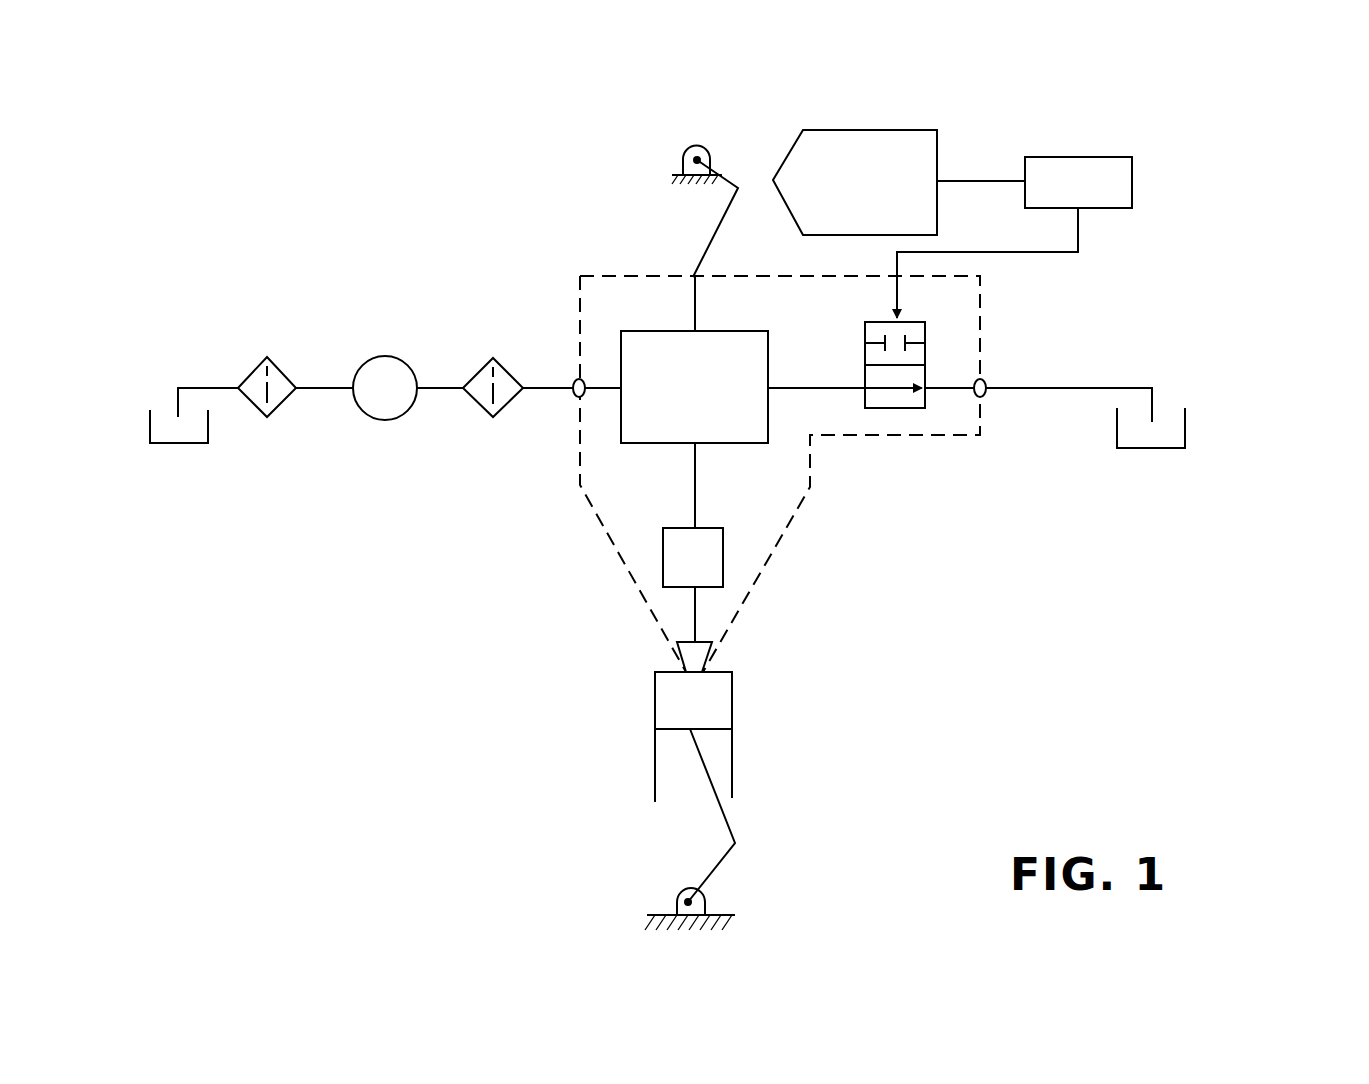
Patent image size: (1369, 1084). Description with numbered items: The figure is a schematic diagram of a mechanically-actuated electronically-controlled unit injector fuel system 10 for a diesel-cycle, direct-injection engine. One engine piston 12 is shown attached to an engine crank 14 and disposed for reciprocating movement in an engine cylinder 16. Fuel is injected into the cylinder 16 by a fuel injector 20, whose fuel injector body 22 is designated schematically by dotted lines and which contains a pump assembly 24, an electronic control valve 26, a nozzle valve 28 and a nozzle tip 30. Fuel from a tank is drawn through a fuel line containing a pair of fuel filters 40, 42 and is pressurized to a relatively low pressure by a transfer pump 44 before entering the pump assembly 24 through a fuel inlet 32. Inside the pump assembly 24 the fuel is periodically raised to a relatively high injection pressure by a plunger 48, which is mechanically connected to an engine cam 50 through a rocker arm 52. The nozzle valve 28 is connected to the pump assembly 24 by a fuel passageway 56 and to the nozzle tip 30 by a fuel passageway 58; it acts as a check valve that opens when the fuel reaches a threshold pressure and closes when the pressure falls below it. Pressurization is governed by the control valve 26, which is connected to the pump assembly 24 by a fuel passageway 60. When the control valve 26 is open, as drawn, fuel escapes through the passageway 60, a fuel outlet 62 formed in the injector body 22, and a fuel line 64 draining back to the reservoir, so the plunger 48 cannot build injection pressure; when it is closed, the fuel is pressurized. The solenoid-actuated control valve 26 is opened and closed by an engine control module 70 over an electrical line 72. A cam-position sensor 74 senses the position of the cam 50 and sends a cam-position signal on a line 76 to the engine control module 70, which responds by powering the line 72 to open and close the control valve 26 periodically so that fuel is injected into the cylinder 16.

The fuel injection system 10 is at (1258, 190).
The engine piston 12 is at (732, 700).
The engine crank 14 is at (705, 898).
The engine cylinder 16 is at (732, 757).
The fuel injector 20 is at (572, 278).
The fuel injector body 22 is at (980, 322).
The pump assembly 24 is at (768, 367).
The electronic control valve 26 is at (925, 340).
The nozzle valve 28 is at (700, 528).
The nozzle tip 30 is at (708, 660).
The fuel inlet 32 is at (573, 399).
The fuel filter 40 is at (283, 402).
The fuel filter 42 is at (472, 400).
The transfer pump 44 is at (388, 420).
The plunger 48 is at (695, 305).
The engine cam 50 is at (709, 150).
The rocker arm 52 is at (712, 245).
The fuel passageway 56 is at (695, 473).
The fuel passageway 58 is at (695, 605).
The fuel passageway 60 is at (803, 390).
The fuel outlet 62 is at (987, 398).
The fuel line 64 is at (1080, 388).
The engine control module 70 is at (1132, 180).
The electrical line 72 is at (1078, 252).
The cam-position sensor 74 is at (860, 128).
The line 76 is at (988, 181).